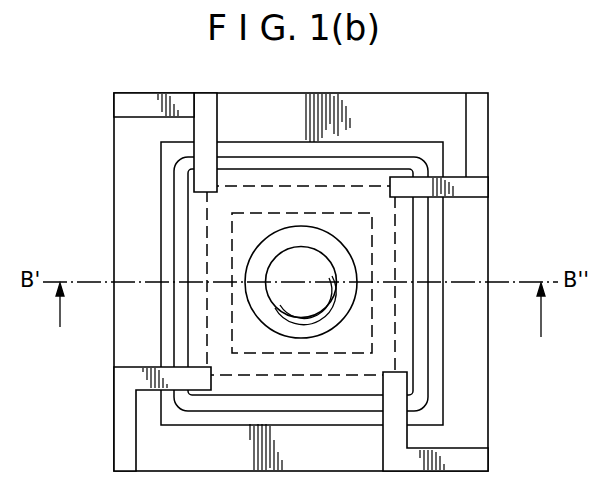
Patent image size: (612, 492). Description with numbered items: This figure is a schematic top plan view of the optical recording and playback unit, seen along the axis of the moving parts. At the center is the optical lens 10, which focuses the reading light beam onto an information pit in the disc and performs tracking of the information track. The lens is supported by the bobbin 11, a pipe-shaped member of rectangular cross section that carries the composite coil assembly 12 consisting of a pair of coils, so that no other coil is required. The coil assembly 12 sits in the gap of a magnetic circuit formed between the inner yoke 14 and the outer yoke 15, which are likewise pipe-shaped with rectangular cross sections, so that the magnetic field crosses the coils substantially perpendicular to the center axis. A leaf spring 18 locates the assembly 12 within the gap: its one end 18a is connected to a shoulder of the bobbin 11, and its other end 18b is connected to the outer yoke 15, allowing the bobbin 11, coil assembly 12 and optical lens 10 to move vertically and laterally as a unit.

The optical lens 10 is at (283, 257).
The bobbin 11 is at (192, 296).
The composite coil assembly 12 is at (177, 222).
The inner yoke 14 is at (395, 257).
The outer yoke 15 is at (484, 323).
The leaf spring 18 is at (480, 133).
The one end of leaf spring 18a is at (210, 178).
The other end of leaf spring 18b is at (134, 98).